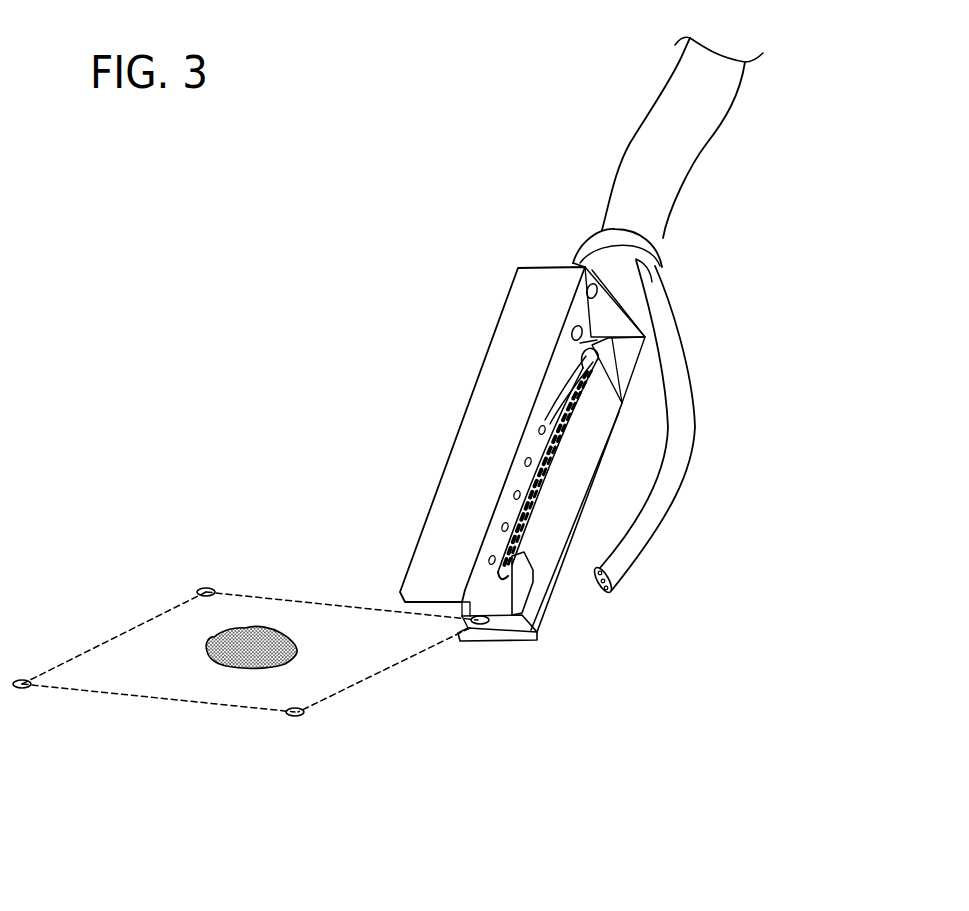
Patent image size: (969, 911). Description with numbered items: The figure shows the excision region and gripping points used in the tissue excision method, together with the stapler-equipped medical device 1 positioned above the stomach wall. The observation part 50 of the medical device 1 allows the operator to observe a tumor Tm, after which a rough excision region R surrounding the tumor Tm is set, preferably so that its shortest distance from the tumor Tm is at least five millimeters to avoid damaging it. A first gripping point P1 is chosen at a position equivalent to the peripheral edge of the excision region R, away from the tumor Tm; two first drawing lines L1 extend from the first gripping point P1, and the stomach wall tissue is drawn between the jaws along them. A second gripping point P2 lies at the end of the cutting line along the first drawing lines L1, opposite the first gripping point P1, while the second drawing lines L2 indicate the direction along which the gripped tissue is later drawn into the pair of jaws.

The medical device 1 is at (536, 196).
The observation part 50 is at (710, 412).
The excision region R is at (168, 648).
The first gripping point P1 is at (479, 625).
The second gripping point P2 is at (205, 587).
The tumor Tm is at (250, 632).
The first drawing lines L1 is at (345, 600).
The second drawing lines L2 is at (80, 652).